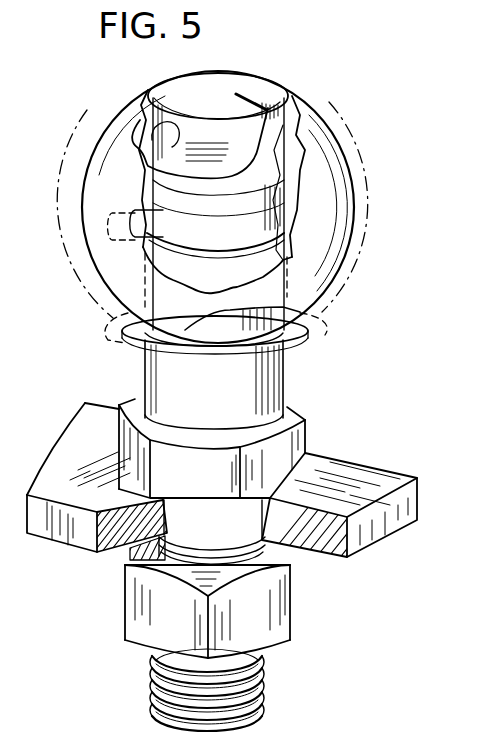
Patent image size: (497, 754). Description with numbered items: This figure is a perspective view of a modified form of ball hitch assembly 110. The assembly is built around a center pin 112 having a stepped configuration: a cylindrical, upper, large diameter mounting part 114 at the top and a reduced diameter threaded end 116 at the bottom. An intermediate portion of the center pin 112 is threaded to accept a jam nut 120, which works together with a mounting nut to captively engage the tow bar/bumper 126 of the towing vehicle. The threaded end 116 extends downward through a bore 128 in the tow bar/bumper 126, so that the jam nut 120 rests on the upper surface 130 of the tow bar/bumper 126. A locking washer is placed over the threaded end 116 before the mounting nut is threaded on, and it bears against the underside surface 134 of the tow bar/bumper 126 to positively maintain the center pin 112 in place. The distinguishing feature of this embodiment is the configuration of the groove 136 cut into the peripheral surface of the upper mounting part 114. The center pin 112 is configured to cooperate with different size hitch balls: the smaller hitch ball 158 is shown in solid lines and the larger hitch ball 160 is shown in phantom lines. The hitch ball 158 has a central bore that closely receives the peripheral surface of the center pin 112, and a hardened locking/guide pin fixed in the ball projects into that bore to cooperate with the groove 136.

The ball hitch assembly 110 is at (400, 203).
The center pin 112 is at (237, 388).
The upper, large diameter mounting part 114 is at (262, 407).
The threaded end 116 is at (268, 677).
The jam nut 120 is at (283, 452).
The tow bar/bumper 126 is at (387, 522).
The bore 128 is at (230, 518).
The upper surface 130 is at (367, 484).
The underside surface 134 is at (333, 556).
The groove 136 is at (246, 112).
The hitch ball 158 is at (313, 147).
The hitch ball 160 is at (360, 183).